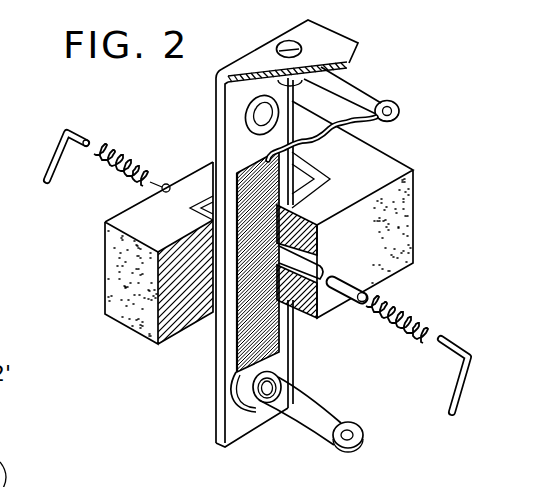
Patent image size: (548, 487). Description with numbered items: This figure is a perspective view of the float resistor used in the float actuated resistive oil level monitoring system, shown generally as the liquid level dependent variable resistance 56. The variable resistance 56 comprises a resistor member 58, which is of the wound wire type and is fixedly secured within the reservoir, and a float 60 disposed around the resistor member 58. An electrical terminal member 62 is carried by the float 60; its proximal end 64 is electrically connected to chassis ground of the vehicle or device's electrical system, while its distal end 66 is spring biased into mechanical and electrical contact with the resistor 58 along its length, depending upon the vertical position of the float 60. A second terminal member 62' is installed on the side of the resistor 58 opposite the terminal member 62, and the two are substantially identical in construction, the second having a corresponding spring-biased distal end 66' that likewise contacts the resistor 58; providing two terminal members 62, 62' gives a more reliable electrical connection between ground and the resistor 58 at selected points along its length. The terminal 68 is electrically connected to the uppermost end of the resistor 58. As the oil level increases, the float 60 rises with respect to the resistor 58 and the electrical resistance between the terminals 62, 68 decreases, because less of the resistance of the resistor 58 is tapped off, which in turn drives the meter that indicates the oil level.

The liquid level dependent variable resistance 56 is at (395, 62).
The resistor member 58 is at (238, 338).
The float 60 is at (415, 229).
The electrical terminal member 62 is at (432, 320).
The second terminal member 62' is at (98, 138).
The proximal end 64 is at (452, 417).
The distal end 66 is at (349, 327).
The distal end of second terminal member 66' is at (176, 164).
The terminal 68 is at (402, 112).